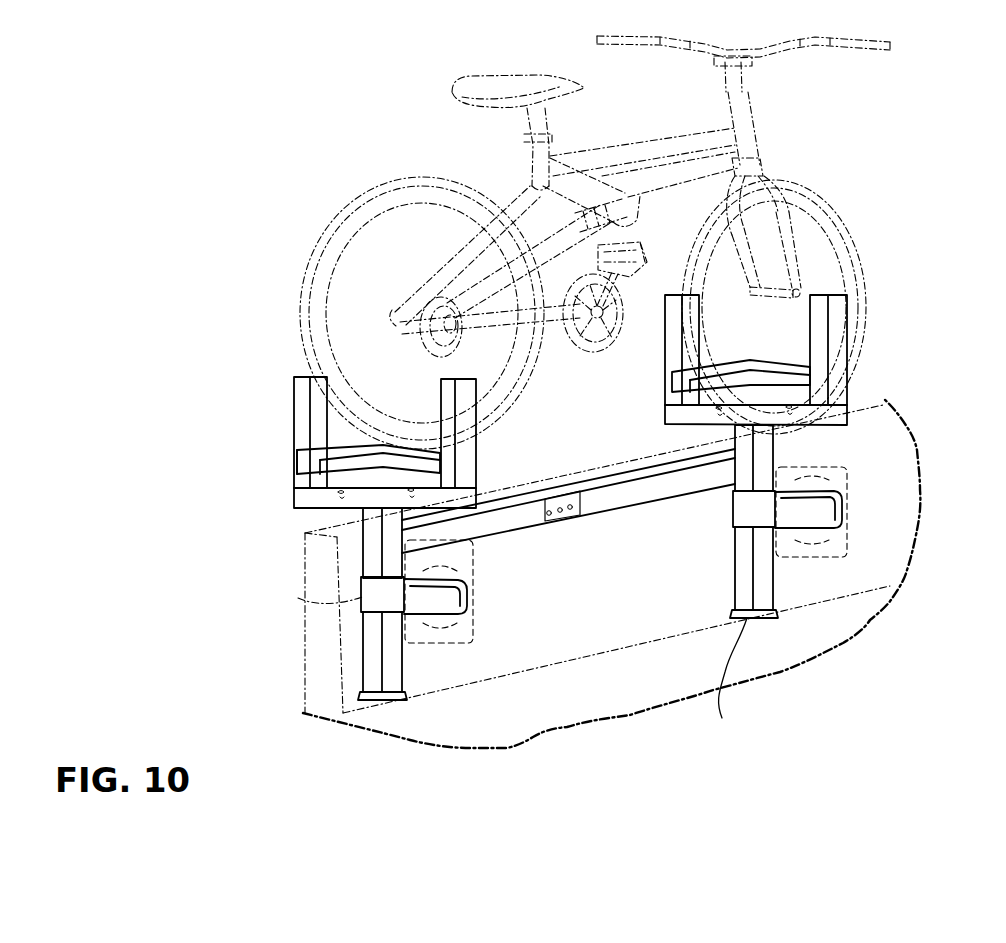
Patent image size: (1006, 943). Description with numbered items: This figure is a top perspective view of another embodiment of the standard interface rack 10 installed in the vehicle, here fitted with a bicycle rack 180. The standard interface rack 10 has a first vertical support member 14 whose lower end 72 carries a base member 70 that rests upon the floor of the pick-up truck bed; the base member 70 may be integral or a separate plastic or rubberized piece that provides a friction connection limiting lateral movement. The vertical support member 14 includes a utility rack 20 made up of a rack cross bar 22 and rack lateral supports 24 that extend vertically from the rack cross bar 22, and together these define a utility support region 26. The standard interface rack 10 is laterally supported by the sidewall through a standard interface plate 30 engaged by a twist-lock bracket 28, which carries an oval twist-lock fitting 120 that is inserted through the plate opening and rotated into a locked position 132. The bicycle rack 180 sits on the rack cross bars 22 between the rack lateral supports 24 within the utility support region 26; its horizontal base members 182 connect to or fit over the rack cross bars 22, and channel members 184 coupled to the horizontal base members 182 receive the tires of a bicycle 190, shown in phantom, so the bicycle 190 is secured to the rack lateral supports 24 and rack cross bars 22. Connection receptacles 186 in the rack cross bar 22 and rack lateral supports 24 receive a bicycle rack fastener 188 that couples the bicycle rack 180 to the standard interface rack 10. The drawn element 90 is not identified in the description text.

The standard interface rack 10 is at (832, 674).
The first vertical support member 14 is at (370, 645).
The utility rack 20 is at (824, 366).
The rack cross bar 22 is at (375, 511).
The rack lateral support 24 is at (297, 421).
The utility support region 26 is at (622, 386).
The twist-lock bracket 28 is at (370, 597).
The standard interface plate 30 is at (474, 557).
The base member 70 is at (729, 683).
The lower end 72 is at (799, 540).
The front leg upper section 90 is at (738, 553).
The twist-lock fitting 120 is at (468, 592).
The locked position 132 is at (480, 629).
The bicycle rack 180 is at (327, 415).
The horizontal base member 182 is at (300, 490).
The channel member 184 is at (315, 463).
The connection receptacle 186 is at (784, 412).
The bicycle rack fastener 188 is at (776, 403).
The bicycle 190 is at (360, 213).